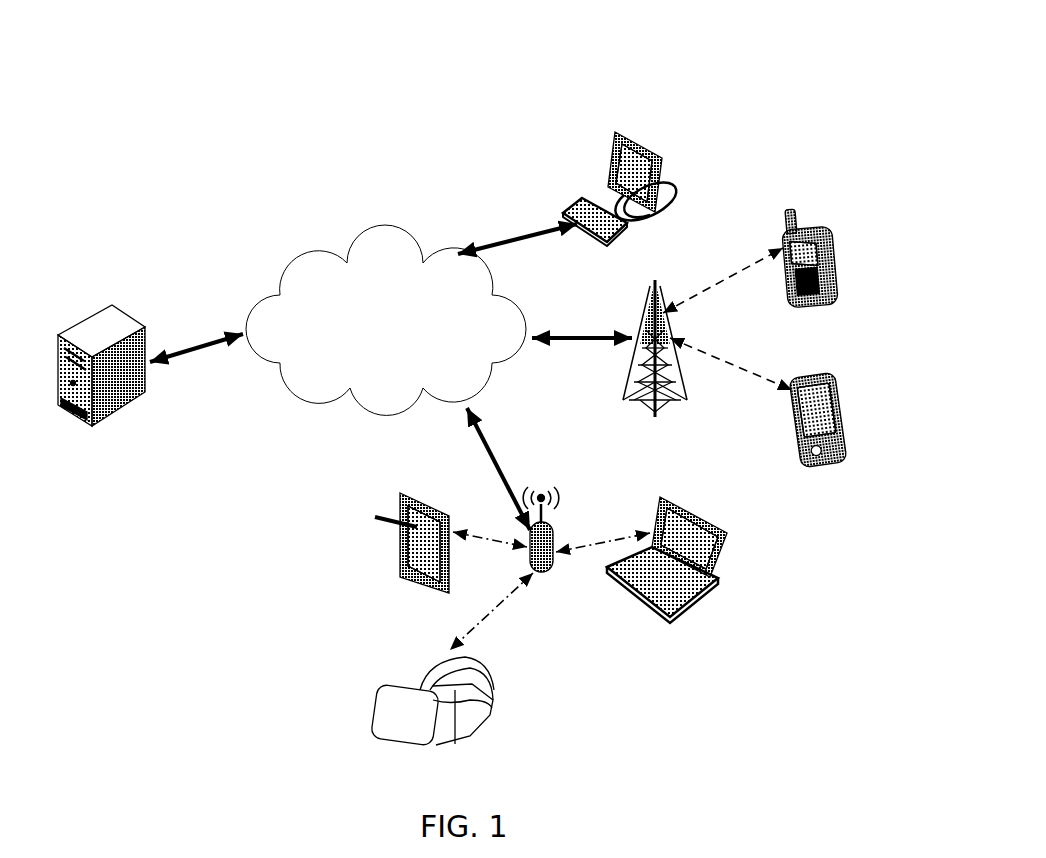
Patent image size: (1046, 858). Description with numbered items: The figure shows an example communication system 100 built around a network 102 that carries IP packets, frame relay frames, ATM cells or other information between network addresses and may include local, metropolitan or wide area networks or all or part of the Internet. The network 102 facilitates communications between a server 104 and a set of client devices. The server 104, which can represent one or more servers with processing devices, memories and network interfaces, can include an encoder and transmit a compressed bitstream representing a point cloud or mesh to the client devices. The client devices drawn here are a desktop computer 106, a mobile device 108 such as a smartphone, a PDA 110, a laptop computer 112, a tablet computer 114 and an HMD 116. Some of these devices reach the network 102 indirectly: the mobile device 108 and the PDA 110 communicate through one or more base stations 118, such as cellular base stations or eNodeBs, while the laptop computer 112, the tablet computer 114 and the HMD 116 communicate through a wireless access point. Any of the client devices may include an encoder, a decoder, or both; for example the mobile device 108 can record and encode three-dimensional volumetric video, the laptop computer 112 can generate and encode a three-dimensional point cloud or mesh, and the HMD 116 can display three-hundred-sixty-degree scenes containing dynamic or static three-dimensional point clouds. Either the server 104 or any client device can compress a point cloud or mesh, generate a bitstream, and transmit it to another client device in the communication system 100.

The communication system 100 is at (797, 89).
The network 102 is at (386, 320).
The server 104 is at (85, 320).
The desktop computer 106 is at (607, 150).
The mobile device 108 is at (835, 248).
The PDA 110 is at (828, 380).
The laptop computer 112 is at (730, 541).
The tablet computer 114 is at (405, 497).
The HMD 116 is at (682, 377).
The base station 118 is at (560, 504).